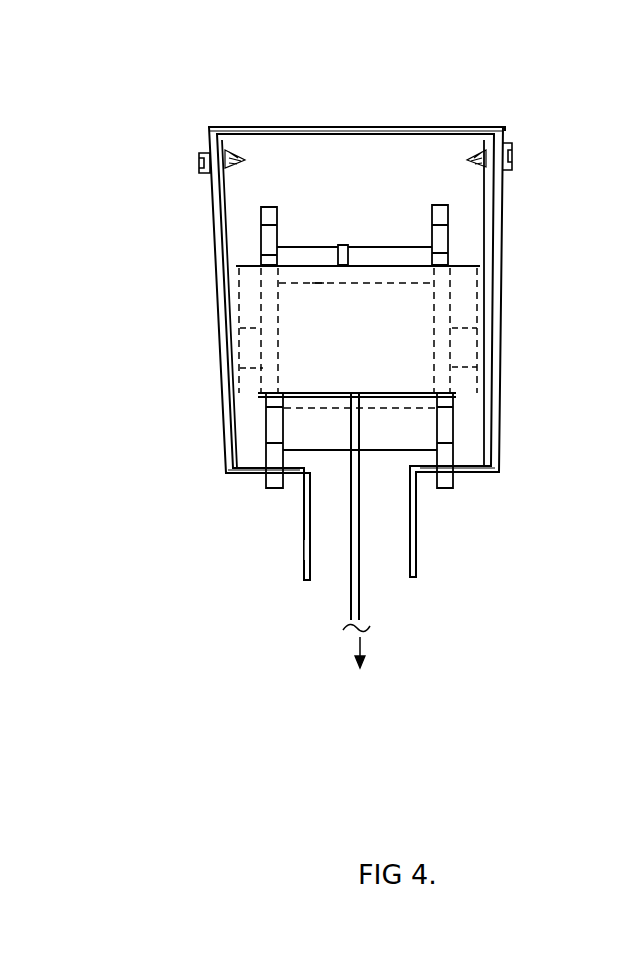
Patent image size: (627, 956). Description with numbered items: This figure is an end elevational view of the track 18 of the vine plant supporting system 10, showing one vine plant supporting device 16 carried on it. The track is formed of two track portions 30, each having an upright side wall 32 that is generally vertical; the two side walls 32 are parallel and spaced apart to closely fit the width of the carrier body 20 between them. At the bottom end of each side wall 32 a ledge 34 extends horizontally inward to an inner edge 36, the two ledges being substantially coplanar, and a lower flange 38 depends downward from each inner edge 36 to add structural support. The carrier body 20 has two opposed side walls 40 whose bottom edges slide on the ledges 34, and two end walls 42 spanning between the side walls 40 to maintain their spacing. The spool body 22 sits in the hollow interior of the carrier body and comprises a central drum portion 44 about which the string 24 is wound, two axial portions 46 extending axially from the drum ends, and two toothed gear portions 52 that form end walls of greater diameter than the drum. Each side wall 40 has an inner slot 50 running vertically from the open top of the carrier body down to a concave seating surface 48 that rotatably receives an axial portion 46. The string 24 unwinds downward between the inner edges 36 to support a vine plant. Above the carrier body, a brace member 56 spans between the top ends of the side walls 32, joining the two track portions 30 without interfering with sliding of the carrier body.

The system 10 is at (341, 73).
The vine plant supporting device 16 is at (373, 75).
The track 18 is at (303, 543).
The carrier body 20 is at (487, 232).
The spool body 22 is at (395, 248).
The string 24 is at (362, 620).
The track portion 30 is at (299, 598).
The upright side wall 32 is at (224, 220).
The ledge 34 is at (237, 475).
The inner edge 36 is at (313, 478).
The lower flange 38 is at (419, 566).
The side wall 40 is at (247, 432).
The end wall 42 is at (328, 333).
The central drum portion 44 is at (318, 283).
The axial portion 46 is at (240, 352).
The seating surface 48 is at (237, 388).
The inner slot 50 is at (237, 277).
The gear portion 52 is at (268, 207).
The brace member 56 is at (375, 127).